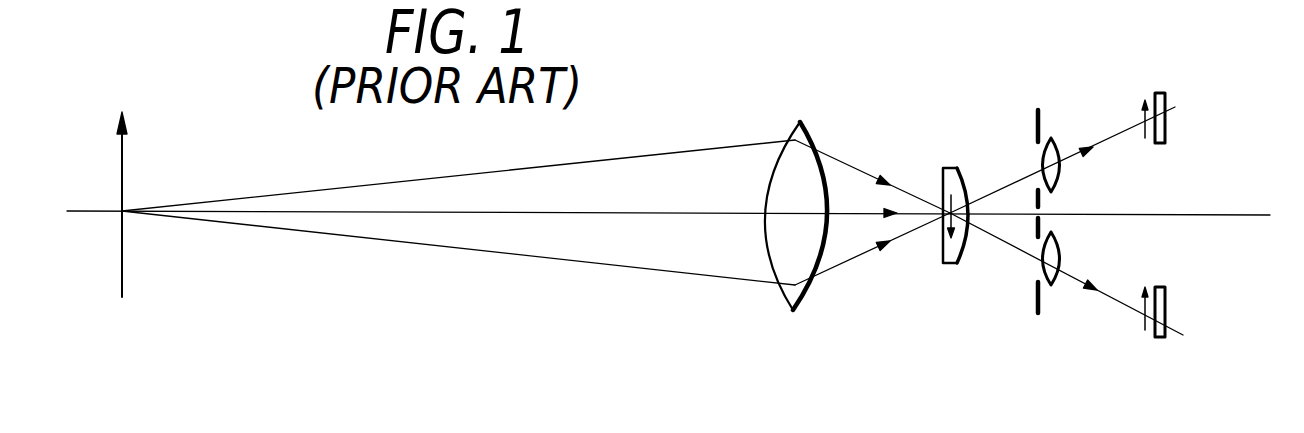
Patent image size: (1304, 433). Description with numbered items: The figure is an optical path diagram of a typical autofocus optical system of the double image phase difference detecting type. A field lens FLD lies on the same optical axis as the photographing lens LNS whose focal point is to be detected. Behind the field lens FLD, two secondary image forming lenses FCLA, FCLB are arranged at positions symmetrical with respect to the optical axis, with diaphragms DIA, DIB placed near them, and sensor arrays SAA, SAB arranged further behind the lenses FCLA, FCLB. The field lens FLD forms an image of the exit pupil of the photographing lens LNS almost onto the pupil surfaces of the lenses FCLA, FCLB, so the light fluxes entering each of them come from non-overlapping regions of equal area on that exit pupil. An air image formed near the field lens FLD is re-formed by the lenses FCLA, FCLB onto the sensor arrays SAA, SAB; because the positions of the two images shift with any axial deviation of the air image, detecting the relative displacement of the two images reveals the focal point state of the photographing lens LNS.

The photographing lens LNS is at (802, 123).
The field lens FLD is at (952, 168).
The diaphragm DIA is at (1035, 122).
The diaphragm DIB is at (1040, 223).
The secondary image forming lens FCLA is at (1053, 138).
The secondary image forming lens FCLB is at (1058, 282).
The sensor array SAA is at (1175, 107).
The sensor array SAB is at (1183, 335).